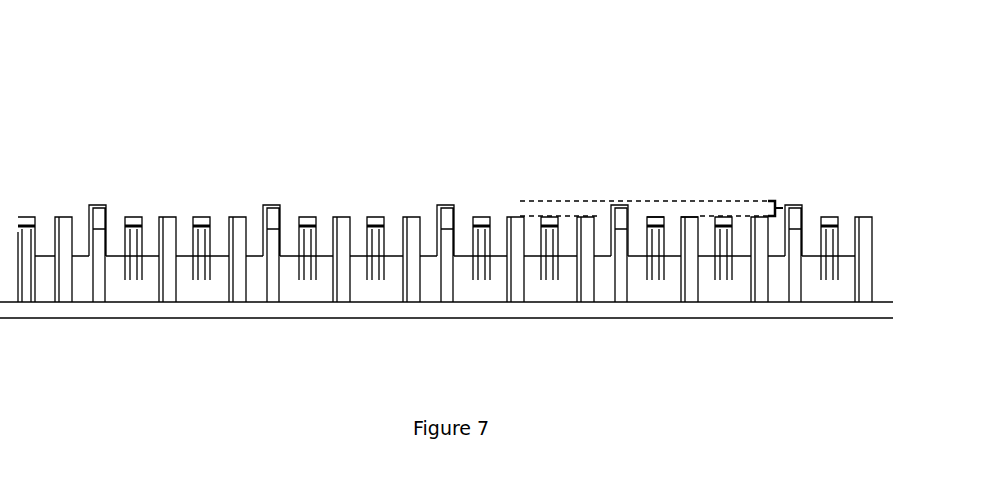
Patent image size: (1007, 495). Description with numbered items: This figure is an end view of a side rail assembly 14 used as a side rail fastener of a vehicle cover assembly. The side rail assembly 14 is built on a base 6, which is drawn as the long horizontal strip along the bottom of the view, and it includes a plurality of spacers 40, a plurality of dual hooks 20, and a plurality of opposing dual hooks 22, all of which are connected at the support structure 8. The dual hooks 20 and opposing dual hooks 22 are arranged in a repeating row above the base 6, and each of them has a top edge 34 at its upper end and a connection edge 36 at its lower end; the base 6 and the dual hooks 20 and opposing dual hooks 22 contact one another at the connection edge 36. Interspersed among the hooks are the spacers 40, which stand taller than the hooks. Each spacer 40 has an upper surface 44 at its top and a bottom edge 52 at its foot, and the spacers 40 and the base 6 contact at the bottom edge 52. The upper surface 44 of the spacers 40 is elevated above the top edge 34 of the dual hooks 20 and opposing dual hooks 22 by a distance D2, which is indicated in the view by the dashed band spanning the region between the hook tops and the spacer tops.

The side rail assembly 14 is at (91, 137).
The base 6 is at (305, 312).
The support structure 8 is at (568, 282).
The bottom edge 52 is at (618, 302).
The upper surface 44 is at (616, 192).
The connection edge 36 is at (693, 302).
The top edge 34 is at (688, 217).
The spacers 40 is at (594, 190).
The opposing dual hooks 22 is at (646, 190).
The dual hooks 20 is at (707, 190).
The distance D2 is at (783, 205).